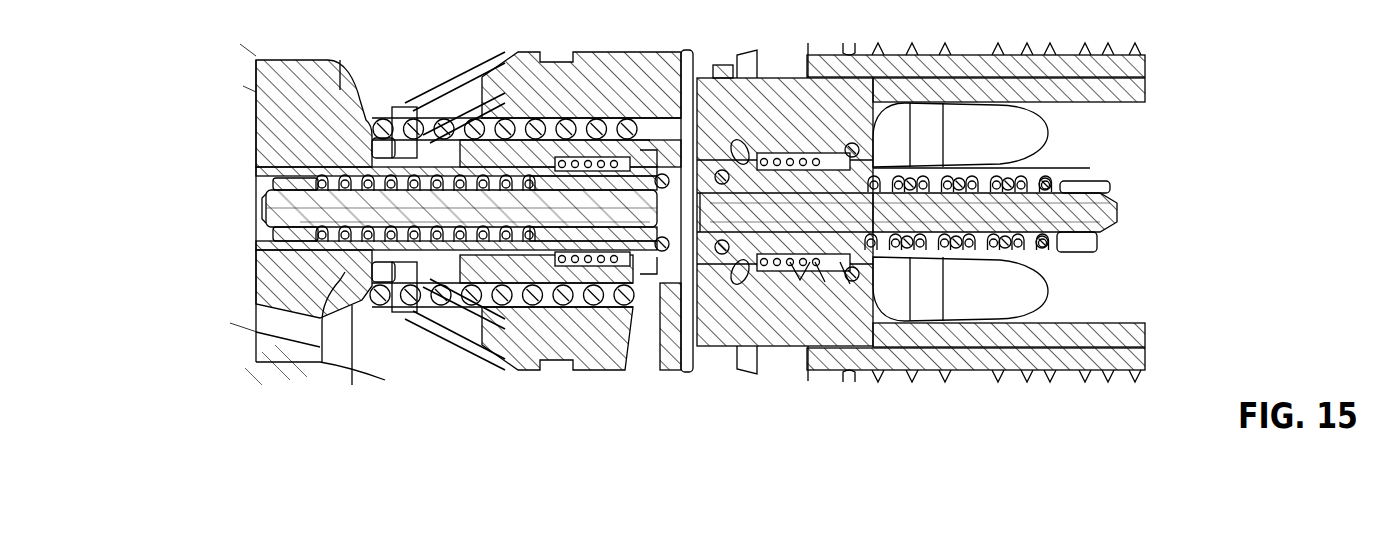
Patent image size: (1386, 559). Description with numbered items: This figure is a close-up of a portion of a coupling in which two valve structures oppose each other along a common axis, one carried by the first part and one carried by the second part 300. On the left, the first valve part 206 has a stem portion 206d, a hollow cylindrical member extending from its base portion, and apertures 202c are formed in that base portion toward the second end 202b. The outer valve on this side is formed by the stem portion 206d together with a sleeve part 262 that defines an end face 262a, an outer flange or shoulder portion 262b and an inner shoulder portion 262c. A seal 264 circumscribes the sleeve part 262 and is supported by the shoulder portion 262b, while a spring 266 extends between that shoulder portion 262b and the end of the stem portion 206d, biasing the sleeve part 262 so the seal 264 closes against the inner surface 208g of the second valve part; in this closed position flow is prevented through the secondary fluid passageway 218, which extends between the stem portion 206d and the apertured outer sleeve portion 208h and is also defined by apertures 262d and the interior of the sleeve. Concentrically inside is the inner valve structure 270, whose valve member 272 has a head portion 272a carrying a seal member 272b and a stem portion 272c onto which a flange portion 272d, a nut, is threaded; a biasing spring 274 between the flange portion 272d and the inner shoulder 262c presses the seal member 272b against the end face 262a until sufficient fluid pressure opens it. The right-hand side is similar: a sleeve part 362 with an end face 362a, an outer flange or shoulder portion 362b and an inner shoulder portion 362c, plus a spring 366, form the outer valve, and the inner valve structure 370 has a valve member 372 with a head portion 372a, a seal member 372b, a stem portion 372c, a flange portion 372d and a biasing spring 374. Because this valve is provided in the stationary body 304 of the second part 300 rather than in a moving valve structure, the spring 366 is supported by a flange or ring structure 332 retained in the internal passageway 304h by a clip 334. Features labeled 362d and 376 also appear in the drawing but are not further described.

The first valve part 206 is at (290, 257).
The stem portion 206d is at (358, 290).
The biasing spring 274 is at (285, 165).
The valve member 272 is at (300, 230).
The stem portion 272c is at (287, 211).
The flange portion 272d is at (282, 236).
The inner valve structure 270 is at (278, 206).
The secondary fluid passageway 218 is at (525, 157).
The sleeve part 262 is at (537, 285).
The end face 262a is at (503, 250).
The outer flange or shoulder portion 262b is at (643, 307).
The inner shoulder portion 262c is at (514, 182).
The apertures 262d is at (417, 255).
The spring 266 is at (592, 162).
The inner surface 208g is at (658, 180).
The apertured outer sleeve portion 208h is at (470, 282).
The apertures 202c is at (310, 72).
The seal 264 is at (650, 250).
The seal member 272b is at (682, 118).
The head portion 272a is at (712, 345).
The sleeve part 362 is at (880, 318).
The end face 362a is at (762, 275).
The outer flange or shoulder portion 362b is at (762, 150).
The inner shoulder portion 362c is at (950, 187).
The ball 362d is at (943, 242).
The second end 202b is at (714, 165).
The head portion 372a is at (732, 150).
The seal member 372b is at (748, 165).
The valve member 372 is at (1085, 227).
The stem portion 372c is at (1118, 214).
The flange portion 372d is at (1110, 240).
The inner valve structure 370 is at (1095, 205).
The spring 366 is at (958, 183).
The biasing spring 374 is at (872, 173).
The second part 300 is at (1085, 66).
The stationary body 304 is at (1115, 333).
The internal passageway 304h is at (960, 161).
The detent 376 is at (800, 280).
The flange or ring structure 332 is at (823, 285).
The clip 334 is at (850, 285).